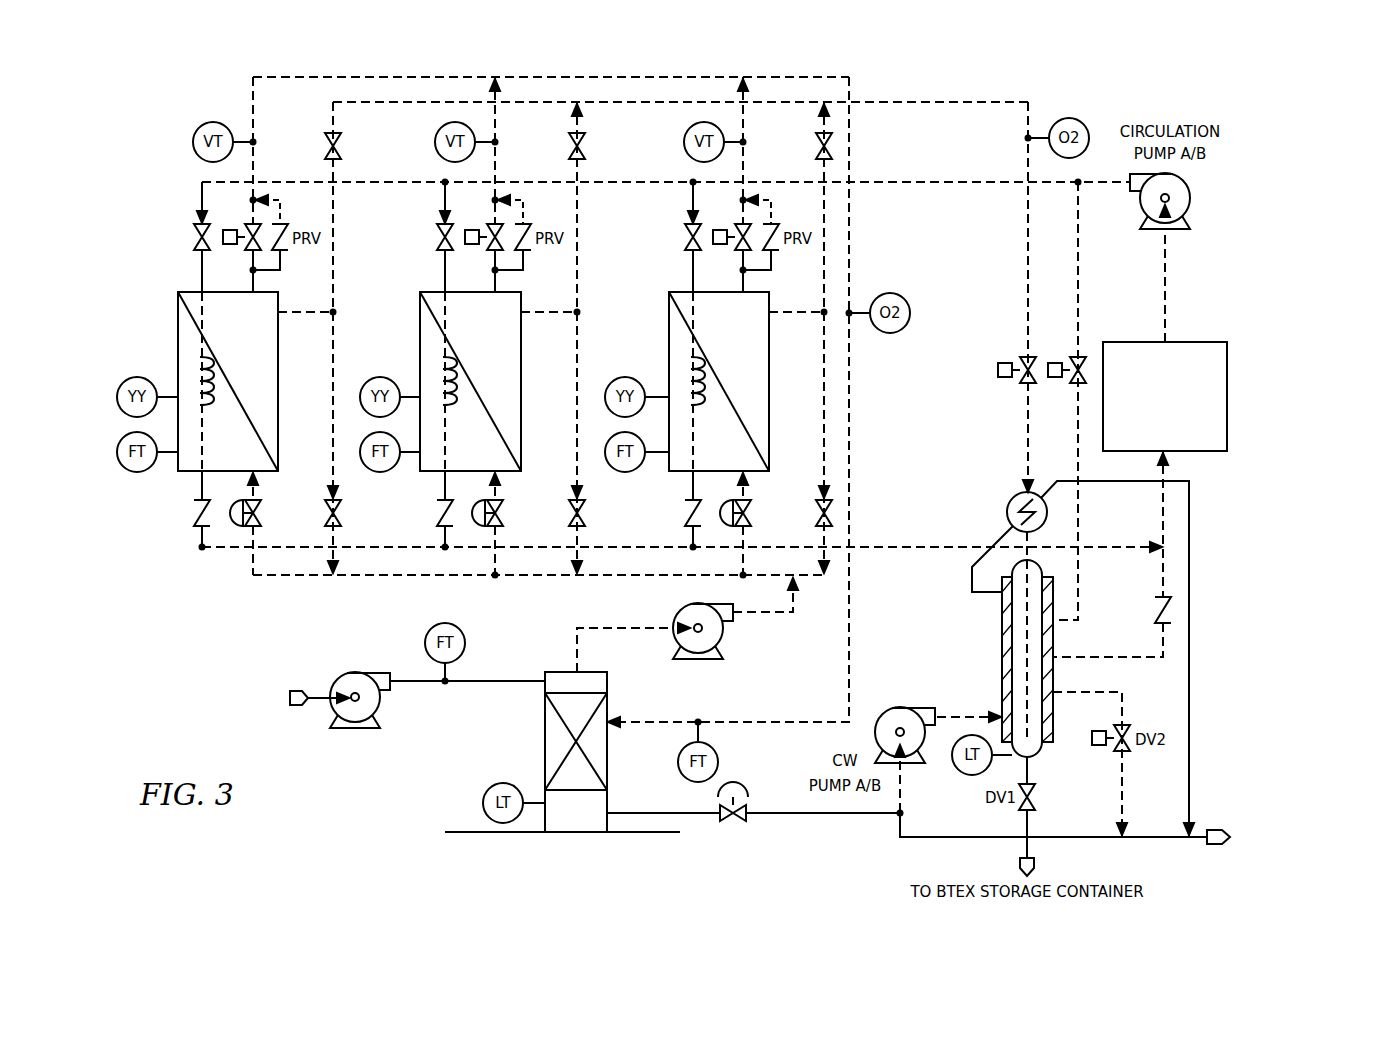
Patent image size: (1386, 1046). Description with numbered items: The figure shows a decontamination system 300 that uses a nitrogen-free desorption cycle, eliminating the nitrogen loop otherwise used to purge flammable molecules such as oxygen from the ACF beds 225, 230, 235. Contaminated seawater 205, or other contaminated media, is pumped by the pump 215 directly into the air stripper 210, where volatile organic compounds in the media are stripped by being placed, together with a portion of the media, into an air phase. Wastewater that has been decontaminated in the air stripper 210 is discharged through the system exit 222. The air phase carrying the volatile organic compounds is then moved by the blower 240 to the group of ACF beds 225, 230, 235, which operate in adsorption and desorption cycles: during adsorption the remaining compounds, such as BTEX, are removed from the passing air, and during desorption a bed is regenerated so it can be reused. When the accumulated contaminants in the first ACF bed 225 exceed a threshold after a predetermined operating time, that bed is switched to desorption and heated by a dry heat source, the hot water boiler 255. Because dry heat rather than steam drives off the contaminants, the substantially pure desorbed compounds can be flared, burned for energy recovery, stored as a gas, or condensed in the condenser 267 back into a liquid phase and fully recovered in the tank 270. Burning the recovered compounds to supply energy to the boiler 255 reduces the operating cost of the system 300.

The decontamination system 300 is at (150, 129).
The first ACF bed 225 is at (178, 362).
The ACF bed 230 is at (420, 362).
The ACF bed 235 is at (669, 362).
The contaminated seawater 205 is at (292, 690).
The pump 215 is at (355, 672).
The air stripper 210 is at (556, 671).
The blower 240 is at (705, 660).
The condenser 267 is at (1012, 497).
The hot water boiler 255 is at (1227, 372).
The tank 270 is at (1040, 758).
The system exit 222 is at (1212, 830).